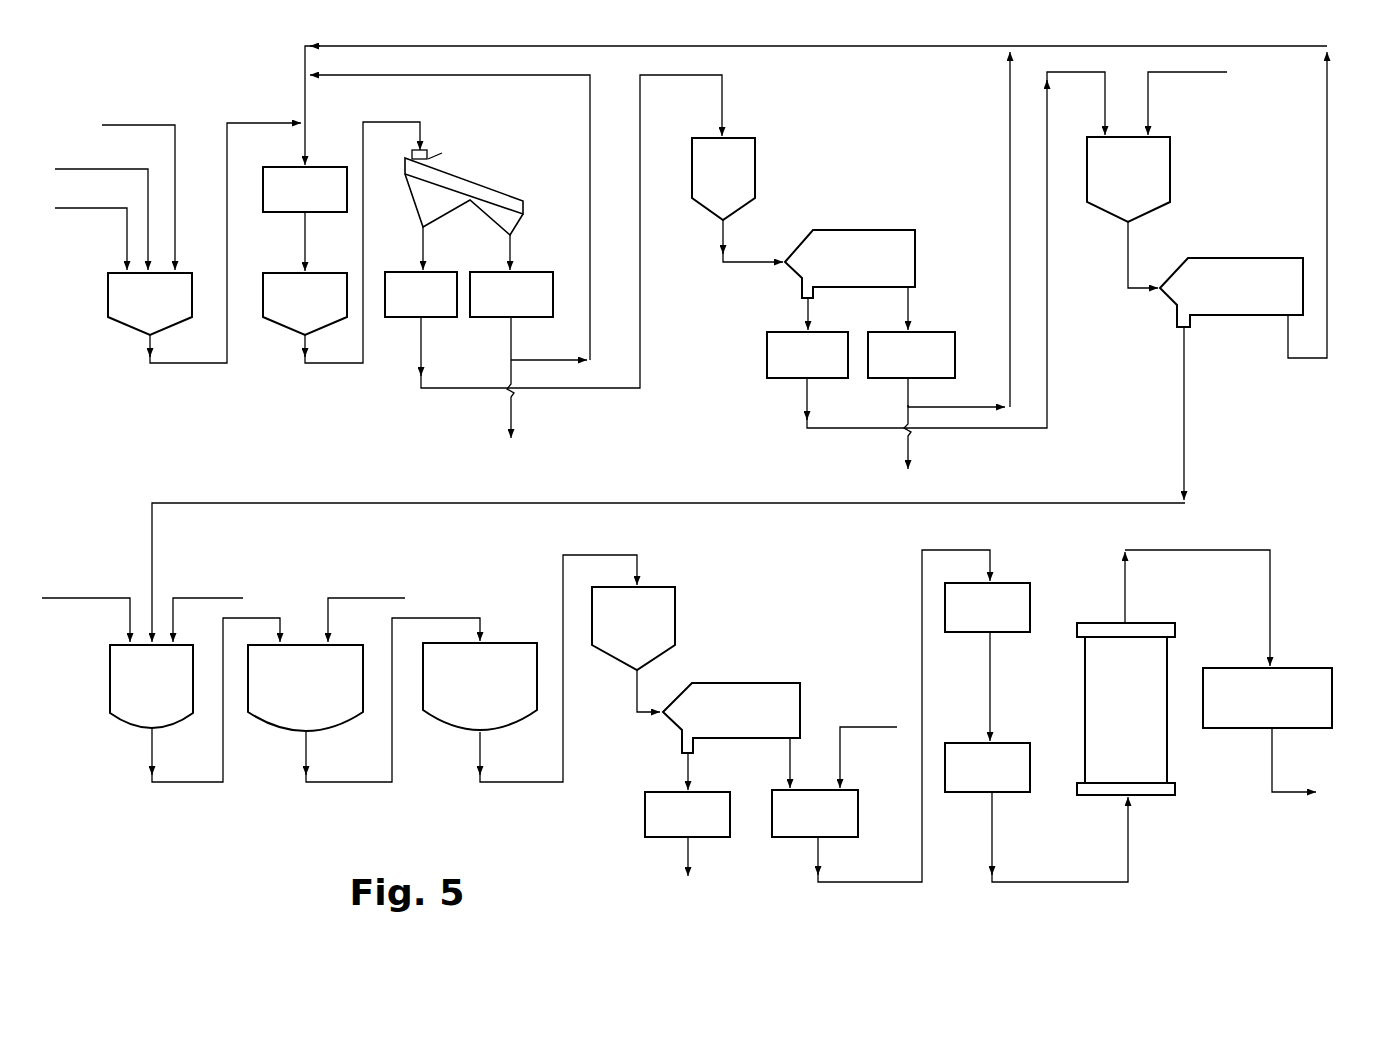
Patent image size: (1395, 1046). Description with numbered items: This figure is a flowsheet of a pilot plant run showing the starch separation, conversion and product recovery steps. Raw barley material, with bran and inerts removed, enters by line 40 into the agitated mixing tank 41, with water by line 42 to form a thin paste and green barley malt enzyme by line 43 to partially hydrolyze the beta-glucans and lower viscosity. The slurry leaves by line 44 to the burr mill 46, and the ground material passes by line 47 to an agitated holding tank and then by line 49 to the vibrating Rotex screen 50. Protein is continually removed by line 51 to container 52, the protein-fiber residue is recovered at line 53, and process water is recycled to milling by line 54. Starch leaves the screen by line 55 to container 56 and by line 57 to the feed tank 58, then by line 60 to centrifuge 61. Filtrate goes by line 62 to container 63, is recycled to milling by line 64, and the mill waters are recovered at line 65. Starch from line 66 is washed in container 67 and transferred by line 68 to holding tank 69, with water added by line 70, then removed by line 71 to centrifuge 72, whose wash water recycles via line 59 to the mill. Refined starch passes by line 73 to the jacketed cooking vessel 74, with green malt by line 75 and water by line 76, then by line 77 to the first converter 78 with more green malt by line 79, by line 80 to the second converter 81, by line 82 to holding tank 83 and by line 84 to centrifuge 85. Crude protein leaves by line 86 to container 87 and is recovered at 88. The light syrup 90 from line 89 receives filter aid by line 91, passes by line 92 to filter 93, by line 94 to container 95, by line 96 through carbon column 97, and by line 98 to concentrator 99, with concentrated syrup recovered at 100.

The line 40 is at (127, 231).
The mixing tank 41 is at (108, 312).
The line 42 is at (150, 170).
The line 43 is at (176, 167).
The line 44 is at (190, 364).
The burr mill 46 is at (283, 213).
The line 47 is at (302, 250).
The line 49 is at (328, 364).
The Rotex screen 50 is at (506, 199).
The line 51 is at (511, 248).
The container 52 is at (553, 282).
The line 53 is at (513, 416).
The line 54 is at (591, 200).
The line 55 is at (424, 240).
The container 56 is at (430, 318).
The line 57 is at (687, 77).
The feed tank 58 is at (756, 160).
The line 59 is at (1288, 347).
The line 60 is at (718, 238).
The centrifuge 61 is at (877, 230).
The line 62 is at (912, 300).
The container 63 is at (956, 342).
The line 64 is at (1008, 157).
The line 65 is at (910, 440).
The line 66 is at (804, 313).
The container 67 is at (767, 349).
The line 68 is at (861, 430).
The holding tank 69 is at (1166, 181).
The line 70 is at (1205, 72).
The line 71 is at (1130, 255).
The centrifuge 72 is at (1265, 258).
The line 73 is at (1190, 469).
The cooking vessel 74 is at (110, 679).
The line 75 is at (116, 602).
The line 76 is at (175, 608).
The line 77 is at (200, 785).
The No. 1 converter 78 is at (258, 713).
The line 79 is at (333, 619).
The line 80 is at (371, 787).
The No. 2 converter 81 is at (528, 643).
The line 82 is at (542, 785).
The holding tank 83 is at (677, 601).
The line 84 is at (636, 691).
The centrifuge 85 is at (760, 685).
The line 86 is at (686, 771).
The container 87 is at (645, 815).
The line 88 is at (688, 863).
The line 89 is at (787, 759).
The light syrup 90 is at (858, 817).
The line 91 is at (841, 751).
The line 92 is at (815, 851).
The filter 93 is at (1020, 583).
The line 94 is at (994, 673).
The container 95 is at (1012, 743).
The line 96 is at (1067, 882).
The carbon column 97 is at (1167, 756).
The line 98 is at (1270, 586).
The concentrator 99 is at (1305, 668).
The line 100 is at (1290, 796).